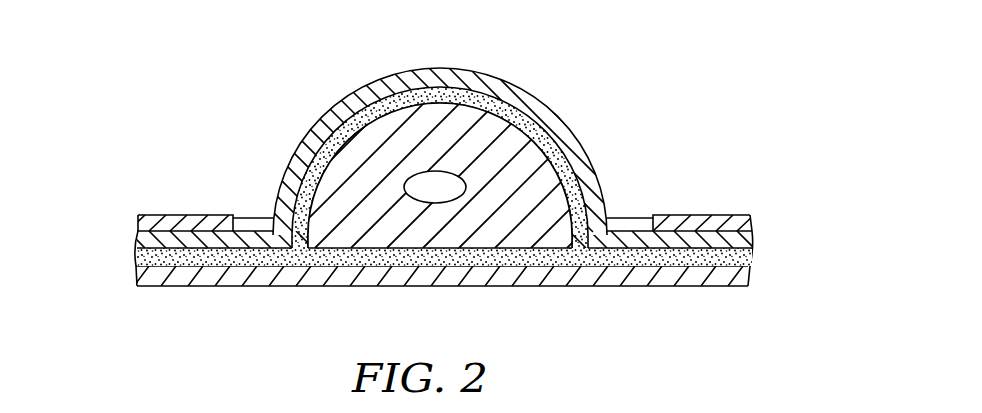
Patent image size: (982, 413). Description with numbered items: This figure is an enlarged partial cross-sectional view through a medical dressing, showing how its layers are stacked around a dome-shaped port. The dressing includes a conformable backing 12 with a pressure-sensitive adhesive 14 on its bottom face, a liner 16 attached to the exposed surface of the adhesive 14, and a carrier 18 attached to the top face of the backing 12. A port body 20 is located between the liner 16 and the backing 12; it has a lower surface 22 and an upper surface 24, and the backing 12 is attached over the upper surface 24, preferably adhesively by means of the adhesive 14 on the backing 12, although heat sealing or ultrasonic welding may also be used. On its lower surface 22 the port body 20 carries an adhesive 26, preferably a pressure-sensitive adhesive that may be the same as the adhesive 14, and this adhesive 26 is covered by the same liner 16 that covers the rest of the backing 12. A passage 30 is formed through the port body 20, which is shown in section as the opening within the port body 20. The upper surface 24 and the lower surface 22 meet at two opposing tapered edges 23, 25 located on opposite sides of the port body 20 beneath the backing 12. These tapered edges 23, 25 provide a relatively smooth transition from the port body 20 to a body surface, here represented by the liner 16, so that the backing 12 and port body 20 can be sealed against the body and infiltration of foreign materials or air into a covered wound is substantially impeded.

The backing 12 is at (505, 82).
The pressure-sensitive adhesive 14 is at (457, 88).
The liner 16 is at (152, 277).
The carrier 18 is at (173, 222).
The port body 20 is at (533, 153).
The lower surface 22 is at (523, 256).
The tapered edge 23 is at (293, 252).
The upper surface 24 is at (379, 88).
The tapered edge 25 is at (578, 250).
The adhesive 26 is at (482, 260).
The passage 30 is at (423, 187).